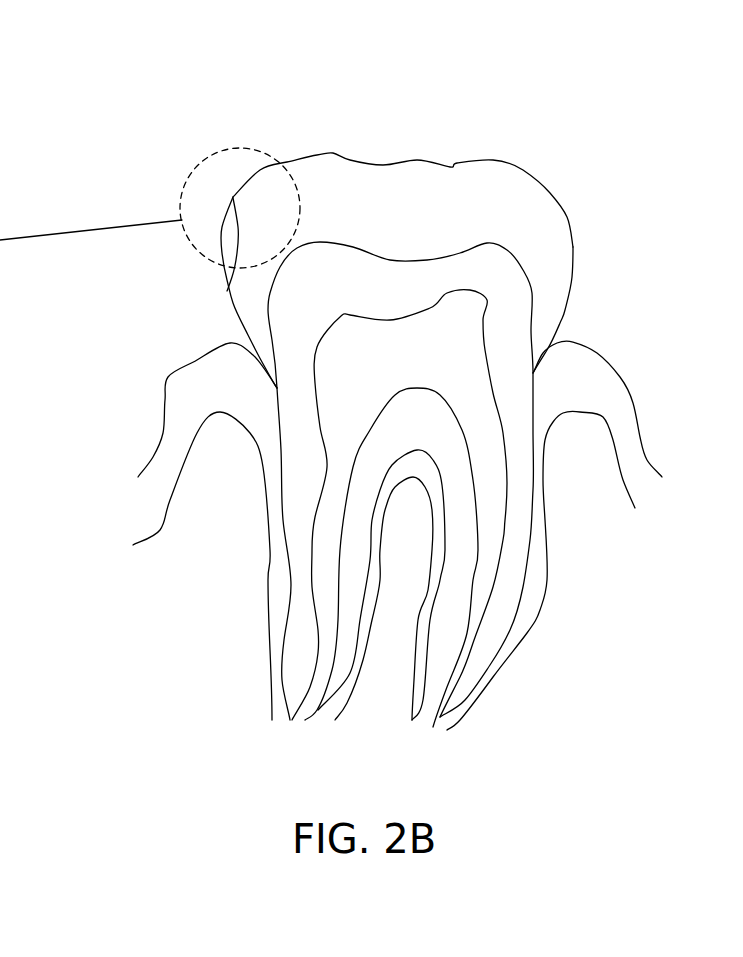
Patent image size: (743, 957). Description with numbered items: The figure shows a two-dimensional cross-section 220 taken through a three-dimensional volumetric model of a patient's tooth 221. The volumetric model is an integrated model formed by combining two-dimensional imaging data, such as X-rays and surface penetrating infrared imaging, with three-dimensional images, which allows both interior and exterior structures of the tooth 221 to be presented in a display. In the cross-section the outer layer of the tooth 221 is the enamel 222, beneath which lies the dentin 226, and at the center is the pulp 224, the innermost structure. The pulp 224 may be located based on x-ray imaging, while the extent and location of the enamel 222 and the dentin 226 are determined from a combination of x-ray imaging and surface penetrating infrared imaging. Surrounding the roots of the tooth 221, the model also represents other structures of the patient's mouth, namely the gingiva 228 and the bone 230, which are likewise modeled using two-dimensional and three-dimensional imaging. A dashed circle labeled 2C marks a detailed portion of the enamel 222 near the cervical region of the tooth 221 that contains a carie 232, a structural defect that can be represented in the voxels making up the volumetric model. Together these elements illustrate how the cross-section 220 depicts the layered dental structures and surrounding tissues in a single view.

The two-dimensional cross-section 220 is at (600, 100).
The tooth 221 is at (415, 147).
The enamel 222 is at (550, 228).
The pulp 224 is at (530, 290).
The dentin 226 is at (513, 332).
The gingiva 228 is at (605, 383).
The bone 230 is at (595, 467).
The carie 232 is at (228, 250).
The detail region of FIG. 2C is at (265, 149).